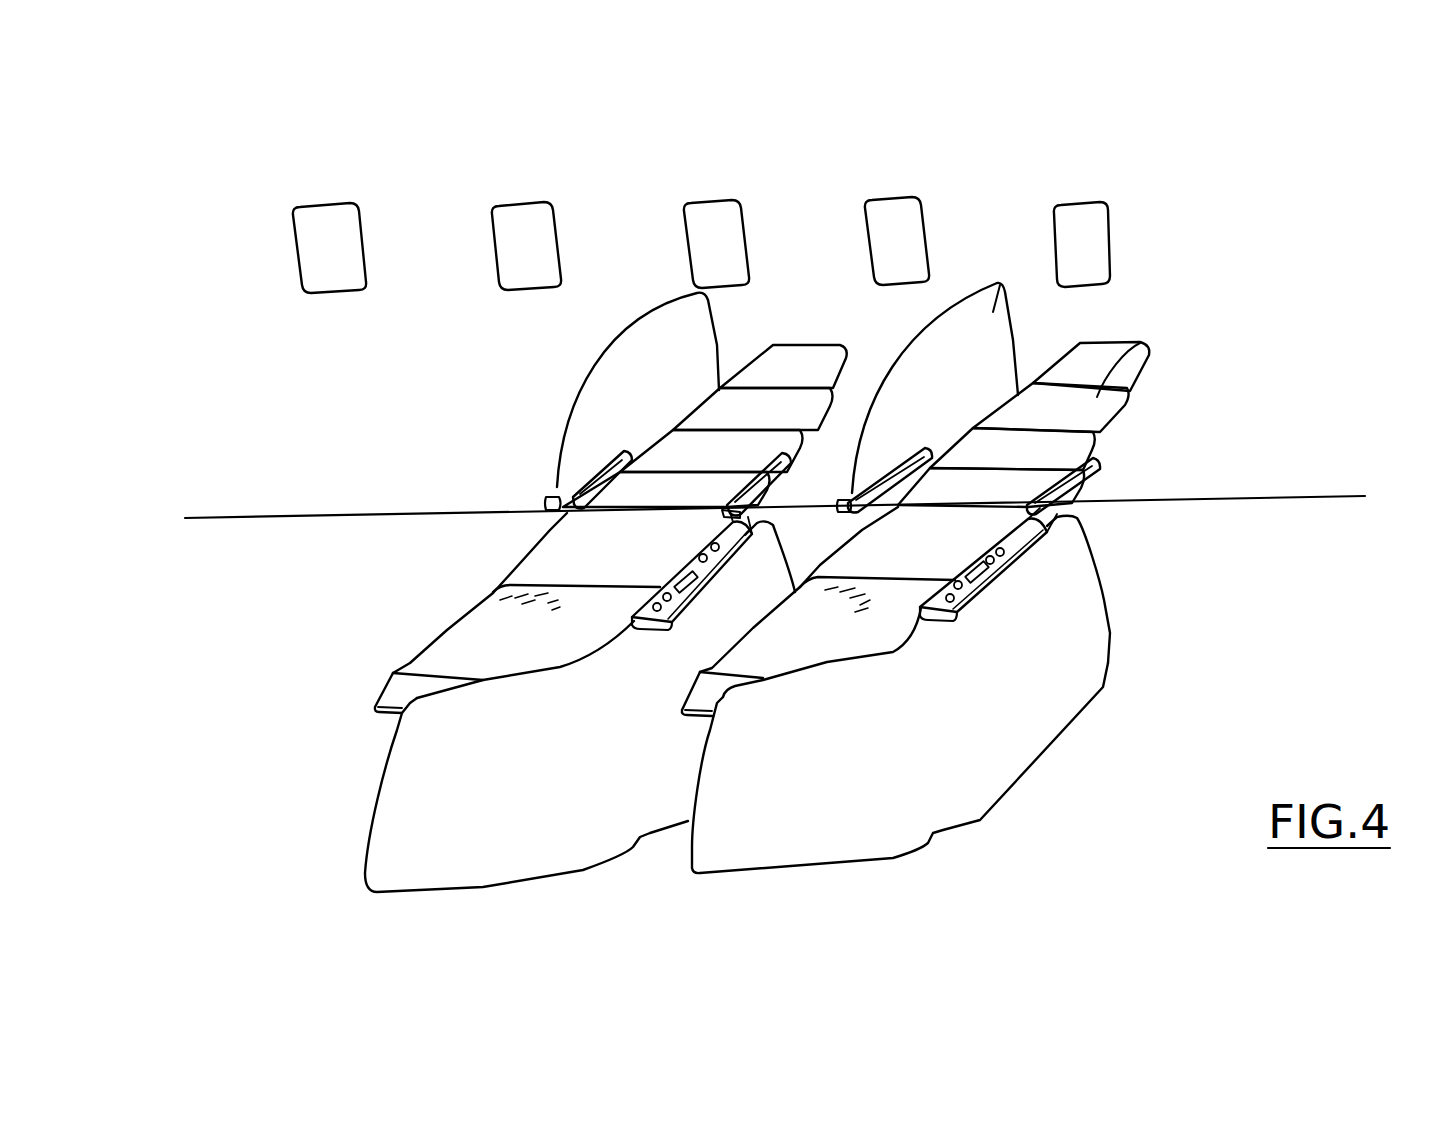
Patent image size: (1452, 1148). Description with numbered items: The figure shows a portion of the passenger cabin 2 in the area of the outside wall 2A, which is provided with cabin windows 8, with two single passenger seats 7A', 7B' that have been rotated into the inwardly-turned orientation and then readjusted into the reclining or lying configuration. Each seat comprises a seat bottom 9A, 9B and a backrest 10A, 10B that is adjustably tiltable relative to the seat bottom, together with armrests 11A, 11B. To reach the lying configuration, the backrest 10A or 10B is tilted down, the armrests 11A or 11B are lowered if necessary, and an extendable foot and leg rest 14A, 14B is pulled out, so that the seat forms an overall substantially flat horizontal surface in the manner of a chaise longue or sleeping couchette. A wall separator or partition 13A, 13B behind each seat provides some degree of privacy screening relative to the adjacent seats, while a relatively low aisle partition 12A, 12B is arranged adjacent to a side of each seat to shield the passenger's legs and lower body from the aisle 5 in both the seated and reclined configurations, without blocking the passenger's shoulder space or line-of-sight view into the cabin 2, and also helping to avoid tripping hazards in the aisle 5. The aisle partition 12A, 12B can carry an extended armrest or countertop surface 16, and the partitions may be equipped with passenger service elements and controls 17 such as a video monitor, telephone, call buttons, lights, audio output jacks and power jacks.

The passenger cabin 2 is at (1282, 318).
The outside wall 2A is at (292, 362).
The aisle 5 is at (978, 906).
The passenger seat in inwardly-turned orientation 7A' is at (557, 511).
The passenger seat in inwardly-turned orientation 7B' is at (951, 507).
The cabin window 8 is at (1103, 217).
The seat bottom 9A is at (640, 563).
The seat bottom 9B is at (952, 557).
The backrest 10A is at (762, 405).
The backrest 10B is at (1140, 342).
The armrest 11A is at (557, 488).
The armrest 11B is at (1097, 474).
The aisle partition 12A is at (502, 816).
The aisle partition 12B is at (830, 816).
The wall partition 13A is at (656, 333).
The wall partition 13B is at (1003, 285).
The extendable foot and leg rest 14A is at (490, 642).
The extendable foot and leg rest 14B is at (787, 637).
The extended armrest or countertop surface 16 is at (1018, 540).
The passenger service elements and controls 17 is at (962, 608).